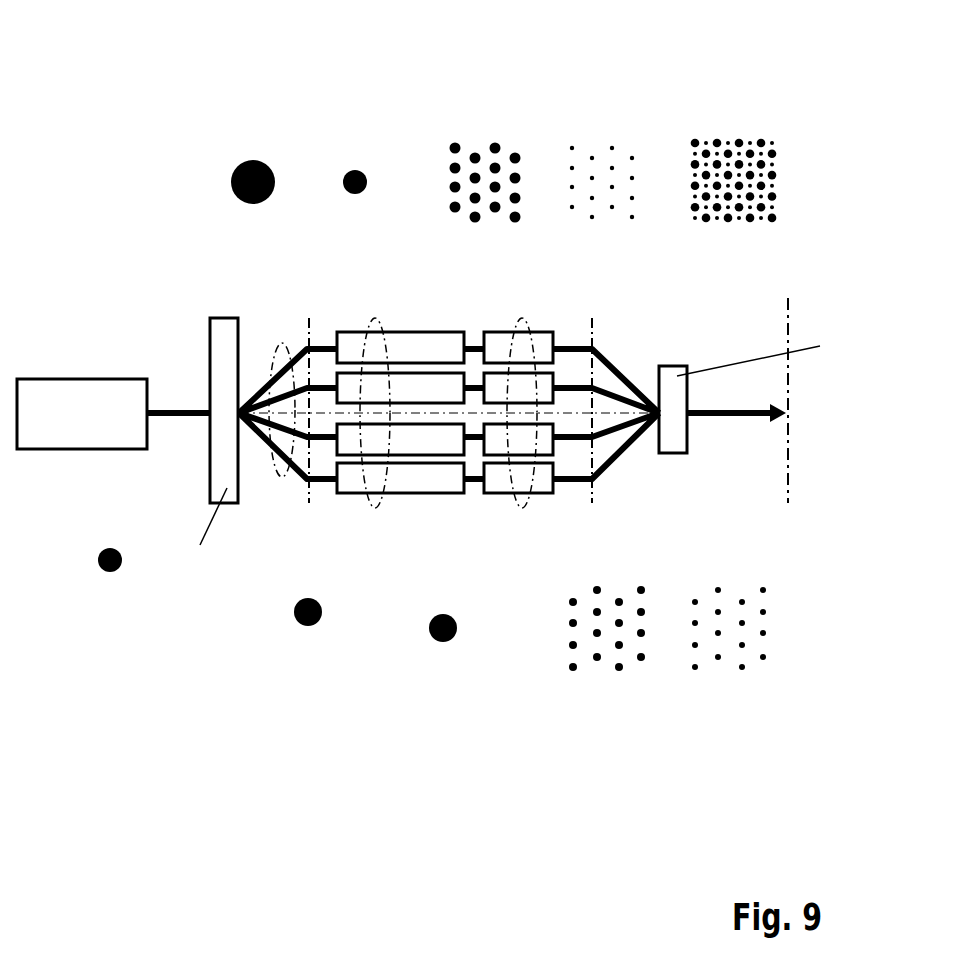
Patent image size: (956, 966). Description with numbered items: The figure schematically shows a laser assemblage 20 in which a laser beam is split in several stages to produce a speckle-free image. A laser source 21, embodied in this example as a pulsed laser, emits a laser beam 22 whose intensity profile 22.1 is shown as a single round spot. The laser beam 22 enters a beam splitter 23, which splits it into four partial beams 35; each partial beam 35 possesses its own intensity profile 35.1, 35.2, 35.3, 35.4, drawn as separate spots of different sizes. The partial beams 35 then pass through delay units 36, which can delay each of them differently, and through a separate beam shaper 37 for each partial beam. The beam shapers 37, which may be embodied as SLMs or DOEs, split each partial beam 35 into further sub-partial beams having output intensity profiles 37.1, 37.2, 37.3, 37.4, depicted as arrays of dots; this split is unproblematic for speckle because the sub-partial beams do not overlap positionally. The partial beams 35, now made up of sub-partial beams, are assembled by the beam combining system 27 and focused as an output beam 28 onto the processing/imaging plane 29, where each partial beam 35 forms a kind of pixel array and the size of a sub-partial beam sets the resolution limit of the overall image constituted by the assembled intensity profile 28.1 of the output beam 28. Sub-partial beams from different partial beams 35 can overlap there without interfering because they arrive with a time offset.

The laser assemblage 20 is at (796, 104).
The laser source 21 is at (48, 379).
The laser beam 22 is at (180, 408).
The intensity profile 22.1 is at (186, 428).
The beam splitter 23 is at (222, 318).
The beam combining system 27 is at (672, 366).
The output beam 28 is at (710, 418).
The assembled intensity profile 28.1 is at (735, 396).
The processing/imaging plane 29 is at (788, 300).
The partial beam 35 is at (282, 343).
The intensity profile of partial beam 35.1 is at (260, 368).
The intensity profile of partial beam 35.2 is at (330, 370).
The intensity profile of partial beam 35.3 is at (321, 455).
The intensity profile of partial beam 35.4 is at (340, 490).
The delay unit 36 is at (375, 318).
The beam shaper 37 is at (520, 318).
The output intensity profile 37.1 is at (562, 330).
The output intensity profile 37.2 is at (583, 365).
The output intensity profile 37.3 is at (570, 455).
The output intensity profile 37.4 is at (618, 478).